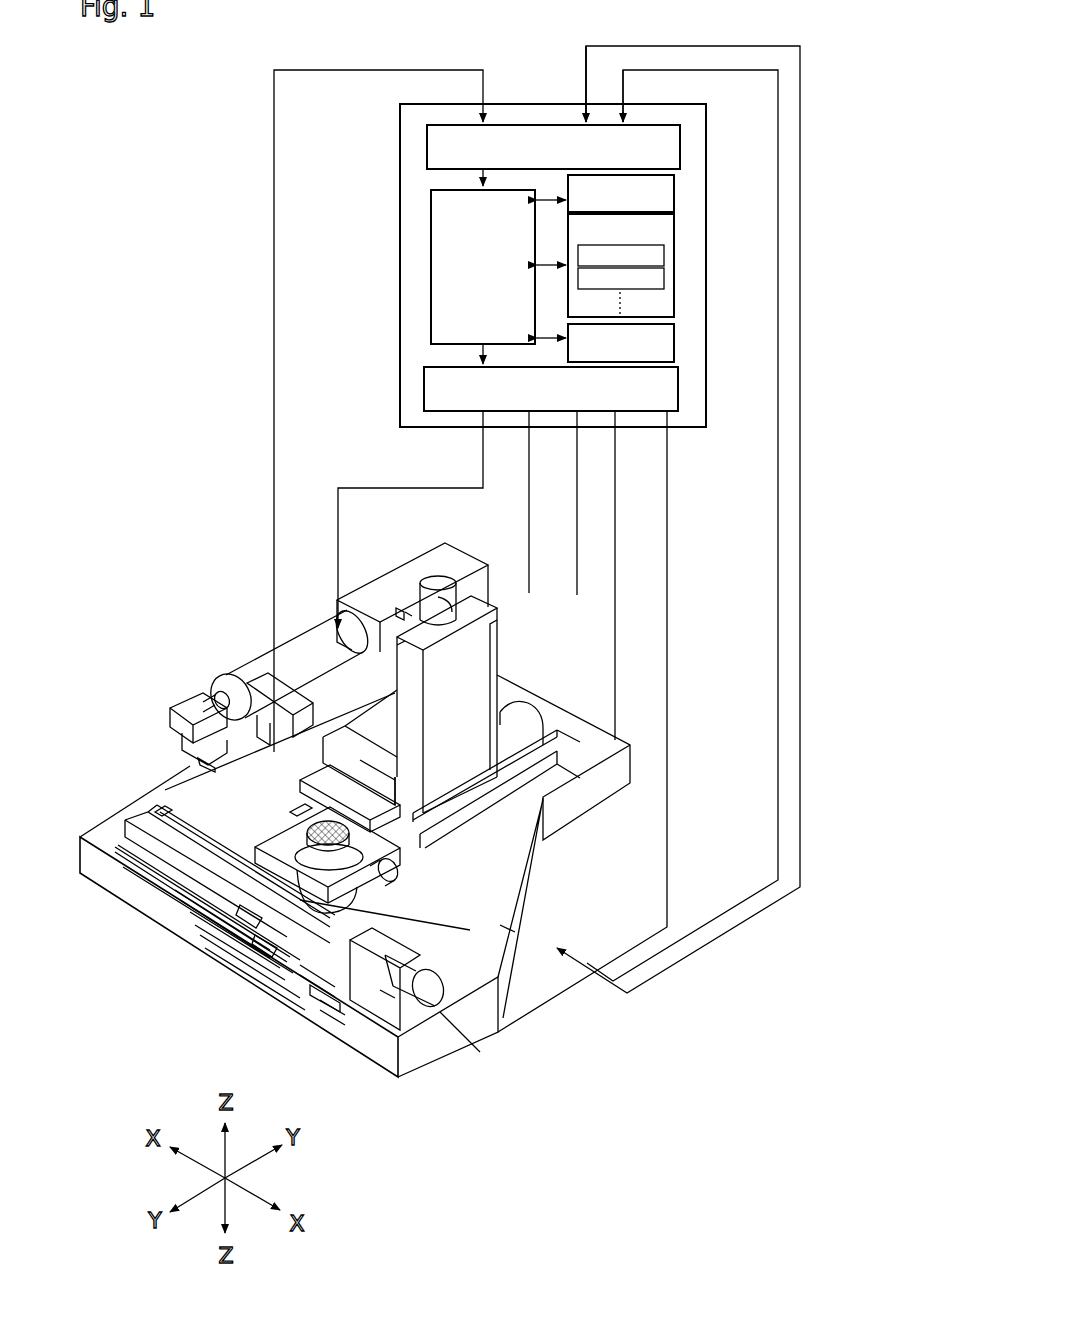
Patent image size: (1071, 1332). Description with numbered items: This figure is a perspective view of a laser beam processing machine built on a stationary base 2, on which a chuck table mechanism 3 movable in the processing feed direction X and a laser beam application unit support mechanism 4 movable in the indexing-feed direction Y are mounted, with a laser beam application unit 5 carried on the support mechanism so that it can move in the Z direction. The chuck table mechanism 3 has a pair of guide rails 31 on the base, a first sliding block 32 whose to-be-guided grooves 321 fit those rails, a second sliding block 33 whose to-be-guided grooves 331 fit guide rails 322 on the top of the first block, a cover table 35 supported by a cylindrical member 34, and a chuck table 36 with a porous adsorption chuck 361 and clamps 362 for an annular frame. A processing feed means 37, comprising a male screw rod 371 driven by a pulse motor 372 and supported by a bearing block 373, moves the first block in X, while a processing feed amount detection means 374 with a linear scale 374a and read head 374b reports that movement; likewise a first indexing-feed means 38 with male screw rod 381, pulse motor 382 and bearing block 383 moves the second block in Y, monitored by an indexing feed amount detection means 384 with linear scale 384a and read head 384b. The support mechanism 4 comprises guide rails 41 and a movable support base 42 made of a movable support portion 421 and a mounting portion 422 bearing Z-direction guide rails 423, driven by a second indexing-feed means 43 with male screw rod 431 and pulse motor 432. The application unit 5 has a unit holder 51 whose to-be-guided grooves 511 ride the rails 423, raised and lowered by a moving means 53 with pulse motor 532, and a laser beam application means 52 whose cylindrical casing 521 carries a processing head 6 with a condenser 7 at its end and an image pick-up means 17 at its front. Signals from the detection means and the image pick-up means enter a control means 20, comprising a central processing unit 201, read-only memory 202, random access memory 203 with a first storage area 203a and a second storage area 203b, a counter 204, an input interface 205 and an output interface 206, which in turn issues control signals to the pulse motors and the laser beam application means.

The stationary base 2 is at (572, 913).
The chuck table mechanism 3 is at (520, 946).
The laser beam application unit support mechanism 4 is at (573, 760).
The laser beam application unit 5 is at (262, 628).
The processing head 6 is at (178, 700).
The condenser 7 is at (178, 740).
The image pick-up means 17 is at (222, 706).
The control means 20 is at (525, 103).
The central processing unit 201 is at (431, 226).
The read-only memory 202 is at (674, 196).
The random access memory 203 is at (660, 265).
The first storage area 203a is at (621, 255).
The second storage area 203b is at (621, 278).
The counter 204 is at (674, 326).
The input interface 205 is at (427, 144).
The output interface 206 is at (424, 388).
The guide rails 31 is at (160, 805).
The first sliding block 32 is at (310, 973).
The second sliding block 33 is at (507, 932).
The cylindrical member 34 is at (333, 997).
The cover table 35 is at (420, 850).
The chuck table 36 is at (290, 842).
The processing feed means 37 is at (370, 993).
The first indexing-feed means 38 is at (427, 887).
The to-be-guided grooves 321 is at (333, 973).
The guide rails 322 is at (263, 940).
The to-be-guided grooves 331 is at (247, 912).
The adsorption chuck 361 is at (432, 831).
The clamps 362 is at (288, 810).
The male screw rod 371 is at (160, 873).
The pulse motor 372 is at (480, 1052).
The bearing block 373 is at (158, 812).
The processing feed amount detection means 374 is at (333, 1003).
The linear scale 374a is at (123, 868).
The read head 374b is at (317, 993).
The male screw rod 381 is at (262, 926).
The pulse motor 382 is at (412, 870).
The bearing block 383 is at (277, 960).
The indexing feed amount detection means 384 is at (437, 973).
The linear scale 384a is at (387, 987).
The read head 384b is at (500, 925).
The guide rails 41 is at (528, 777).
The movable support base 42 is at (500, 668).
The movable support portion 421 is at (342, 733).
The mounting portion 422 is at (500, 637).
The guide rails 423 is at (407, 613).
The second indexing-feed means 43 is at (553, 720).
The male screw rod 431 is at (372, 783).
The pulse motor 432 is at (543, 712).
The unit holder 51 is at (407, 568).
The to-be-guided grooves 511 is at (400, 615).
The laser beam application means 52 is at (290, 632).
The cylindrical casing 521 is at (245, 672).
The moving means 53 is at (433, 568).
The pulse motor 532 is at (440, 583).